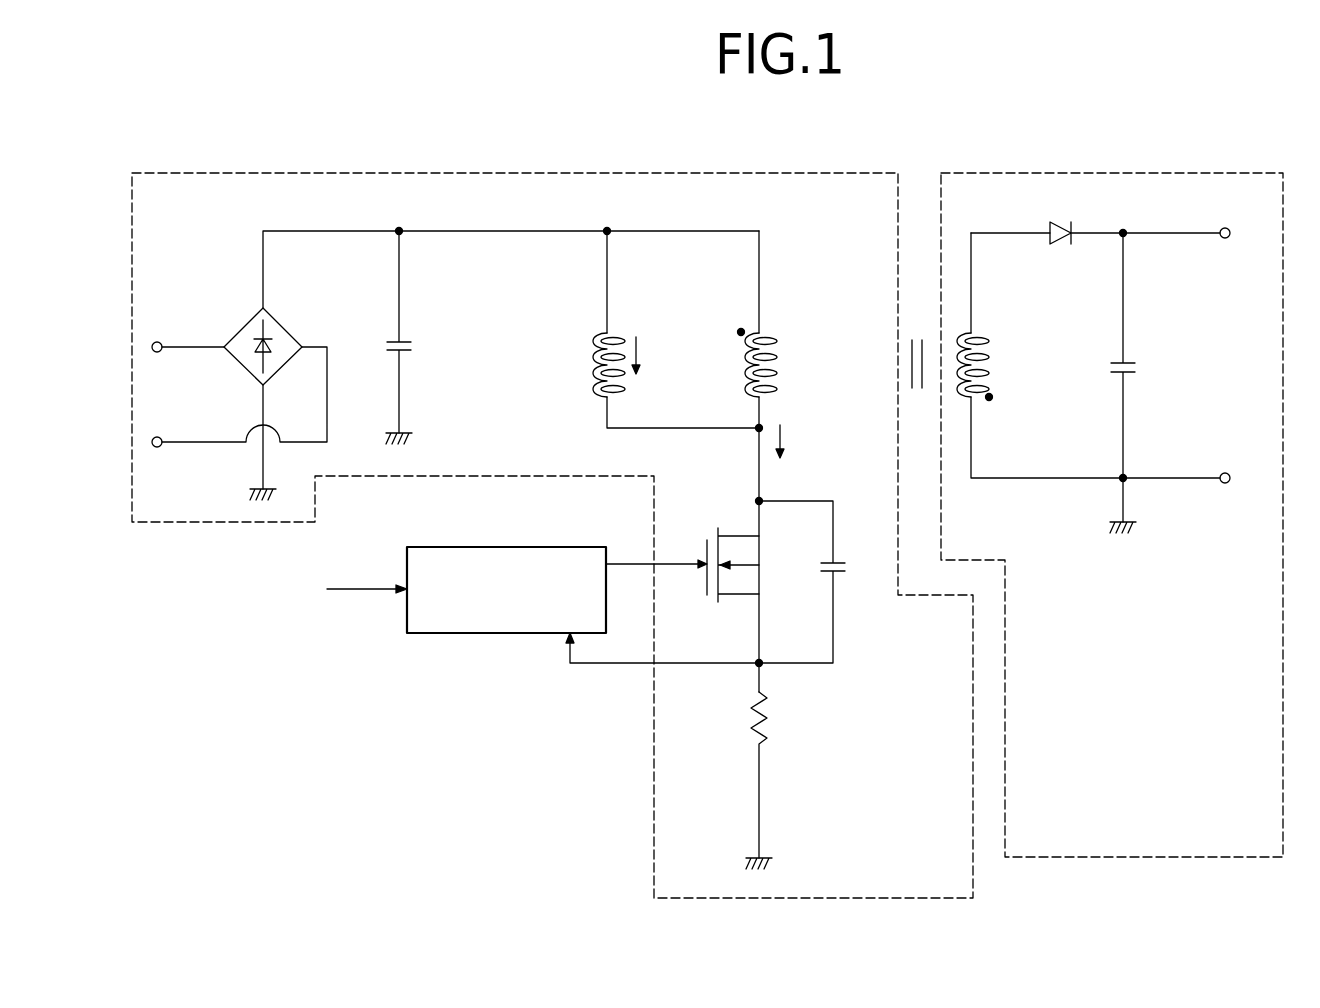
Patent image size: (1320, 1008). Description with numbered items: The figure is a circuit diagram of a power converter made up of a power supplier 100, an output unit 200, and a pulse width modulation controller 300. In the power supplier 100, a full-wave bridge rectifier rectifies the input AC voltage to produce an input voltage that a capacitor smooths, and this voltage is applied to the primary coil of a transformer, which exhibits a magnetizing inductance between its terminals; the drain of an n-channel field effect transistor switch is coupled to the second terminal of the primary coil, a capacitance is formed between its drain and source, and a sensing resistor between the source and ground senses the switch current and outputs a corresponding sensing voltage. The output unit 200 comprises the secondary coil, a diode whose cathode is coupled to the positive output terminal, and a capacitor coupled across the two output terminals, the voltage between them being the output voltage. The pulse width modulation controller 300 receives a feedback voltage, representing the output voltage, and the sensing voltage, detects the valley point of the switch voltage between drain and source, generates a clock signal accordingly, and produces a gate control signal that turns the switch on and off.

The power supplier 100 is at (383, 172).
The output unit 200 is at (1134, 173).
The pulse width modulation (PWM) controller 300 is at (493, 634).